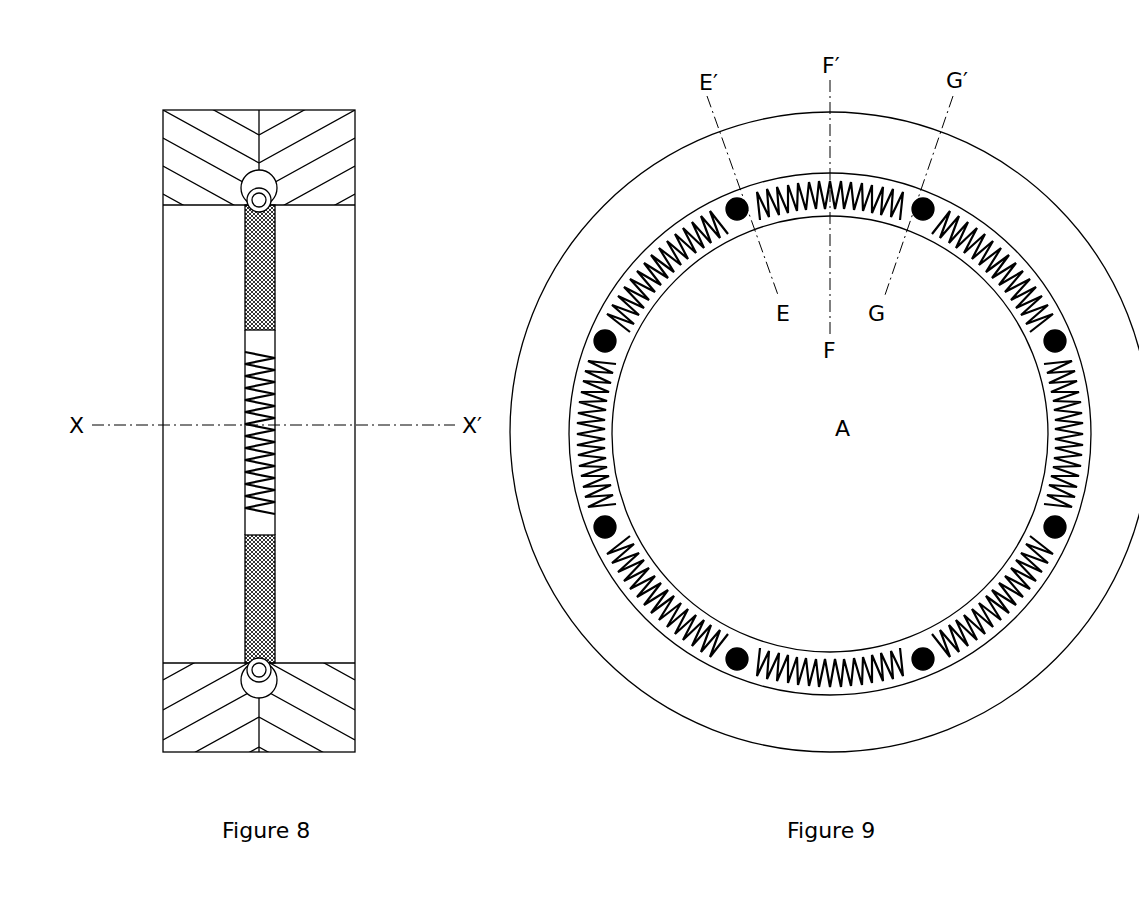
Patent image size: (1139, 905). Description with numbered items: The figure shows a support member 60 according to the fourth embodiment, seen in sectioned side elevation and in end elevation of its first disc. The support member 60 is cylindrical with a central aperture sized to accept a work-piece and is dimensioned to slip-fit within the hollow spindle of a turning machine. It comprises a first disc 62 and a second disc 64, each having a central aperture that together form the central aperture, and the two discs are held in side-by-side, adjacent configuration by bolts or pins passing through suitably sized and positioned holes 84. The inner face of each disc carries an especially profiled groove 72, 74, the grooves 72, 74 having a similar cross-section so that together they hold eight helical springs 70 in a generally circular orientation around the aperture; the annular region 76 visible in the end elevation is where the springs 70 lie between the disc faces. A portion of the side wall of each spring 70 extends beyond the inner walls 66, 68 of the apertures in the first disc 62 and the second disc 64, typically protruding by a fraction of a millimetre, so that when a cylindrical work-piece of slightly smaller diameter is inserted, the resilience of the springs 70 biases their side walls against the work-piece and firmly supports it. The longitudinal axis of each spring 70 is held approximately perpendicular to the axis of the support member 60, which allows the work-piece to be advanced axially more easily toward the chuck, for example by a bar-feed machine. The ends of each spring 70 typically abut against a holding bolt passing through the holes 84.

In FIG. 8, the support member 60 is at (130, 115).
In FIG. 8, the first disc 62 is at (207, 92).
In FIG. 8, the second disc 64 is at (318, 88).
In FIG. 8, the inner wall of first disc aperture 66 is at (198, 205).
In FIG. 8, the inner wall of second disc aperture 68 is at (323, 208).
In FIG. 8, the helical spring 70 is at (245, 455).
In FIG. 9, the helical spring 70 is at (1010, 613).
In FIG. 8, the groove of first disc 72 is at (263, 182).
In FIG. 8, the groove of second disc 74 is at (257, 687).
In FIG. 9, the ring 76 is at (647, 620).
In FIG. 9, the holes for holding bolts 84 is at (595, 532).